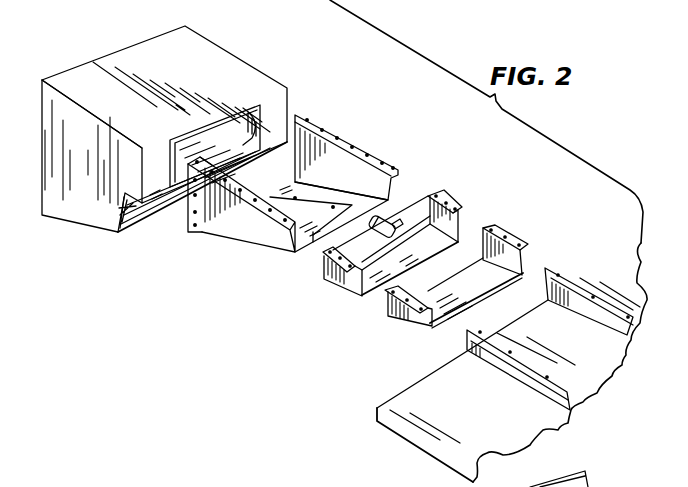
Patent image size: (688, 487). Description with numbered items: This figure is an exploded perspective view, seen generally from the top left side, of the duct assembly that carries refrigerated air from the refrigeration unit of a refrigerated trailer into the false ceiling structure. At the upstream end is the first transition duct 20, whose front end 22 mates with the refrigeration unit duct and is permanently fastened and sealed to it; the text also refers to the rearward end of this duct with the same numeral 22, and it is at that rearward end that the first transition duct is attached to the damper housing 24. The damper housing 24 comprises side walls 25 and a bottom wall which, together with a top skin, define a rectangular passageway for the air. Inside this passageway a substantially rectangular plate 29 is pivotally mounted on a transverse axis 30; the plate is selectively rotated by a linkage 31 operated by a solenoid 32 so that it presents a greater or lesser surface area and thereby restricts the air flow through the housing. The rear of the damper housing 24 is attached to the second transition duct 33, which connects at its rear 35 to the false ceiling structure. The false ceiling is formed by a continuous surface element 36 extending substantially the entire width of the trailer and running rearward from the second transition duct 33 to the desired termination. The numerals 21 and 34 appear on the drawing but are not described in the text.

The first transition duct 20 is at (250, 230).
The mounting plate 21 is at (189, 233).
The front end 22 is at (390, 183).
The damper housing 24 is at (473, 230).
The side walls 25 is at (354, 284).
The rectangular plate 29 is at (427, 196).
The transverse axis 30 is at (457, 228).
The linkage 31 is at (342, 283).
The solenoid 32 is at (373, 226).
The second transition duct 33 is at (518, 233).
The rail bracket 34 is at (528, 262).
The rear 35 is at (388, 310).
The continuous surface element 36 is at (379, 420).